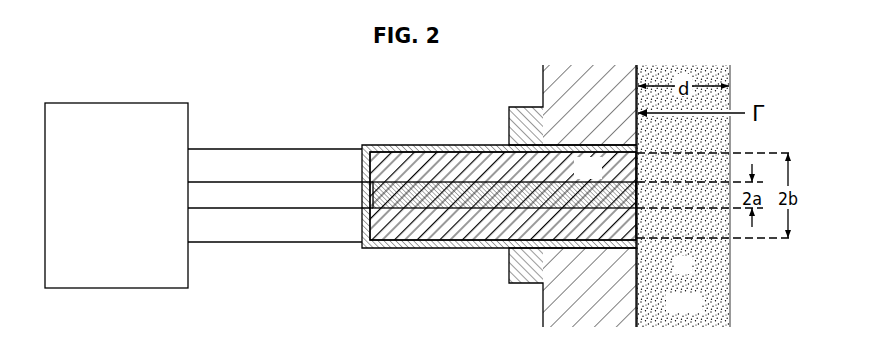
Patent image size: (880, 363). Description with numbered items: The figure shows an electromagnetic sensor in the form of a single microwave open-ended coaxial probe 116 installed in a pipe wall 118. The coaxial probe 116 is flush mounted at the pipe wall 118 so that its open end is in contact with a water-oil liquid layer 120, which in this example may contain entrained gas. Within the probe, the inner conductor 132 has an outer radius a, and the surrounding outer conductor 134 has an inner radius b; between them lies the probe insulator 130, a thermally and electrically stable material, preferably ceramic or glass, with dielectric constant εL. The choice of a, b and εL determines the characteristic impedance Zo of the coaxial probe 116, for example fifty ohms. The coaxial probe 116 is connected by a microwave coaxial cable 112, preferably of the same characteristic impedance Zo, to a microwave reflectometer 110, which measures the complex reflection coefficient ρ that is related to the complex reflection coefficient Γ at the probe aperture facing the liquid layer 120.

The microwave reflectometer 110 is at (110, 103).
The microwave coaxial cable 112 is at (270, 258).
The coaxial probe 116 is at (459, 126).
The pipe wall 118 is at (604, 106).
The liquid layer 120 is at (700, 311).
The probe insulator 130 is at (447, 228).
The inner conductor 132 is at (412, 200).
The outer conductor 134 is at (530, 284).